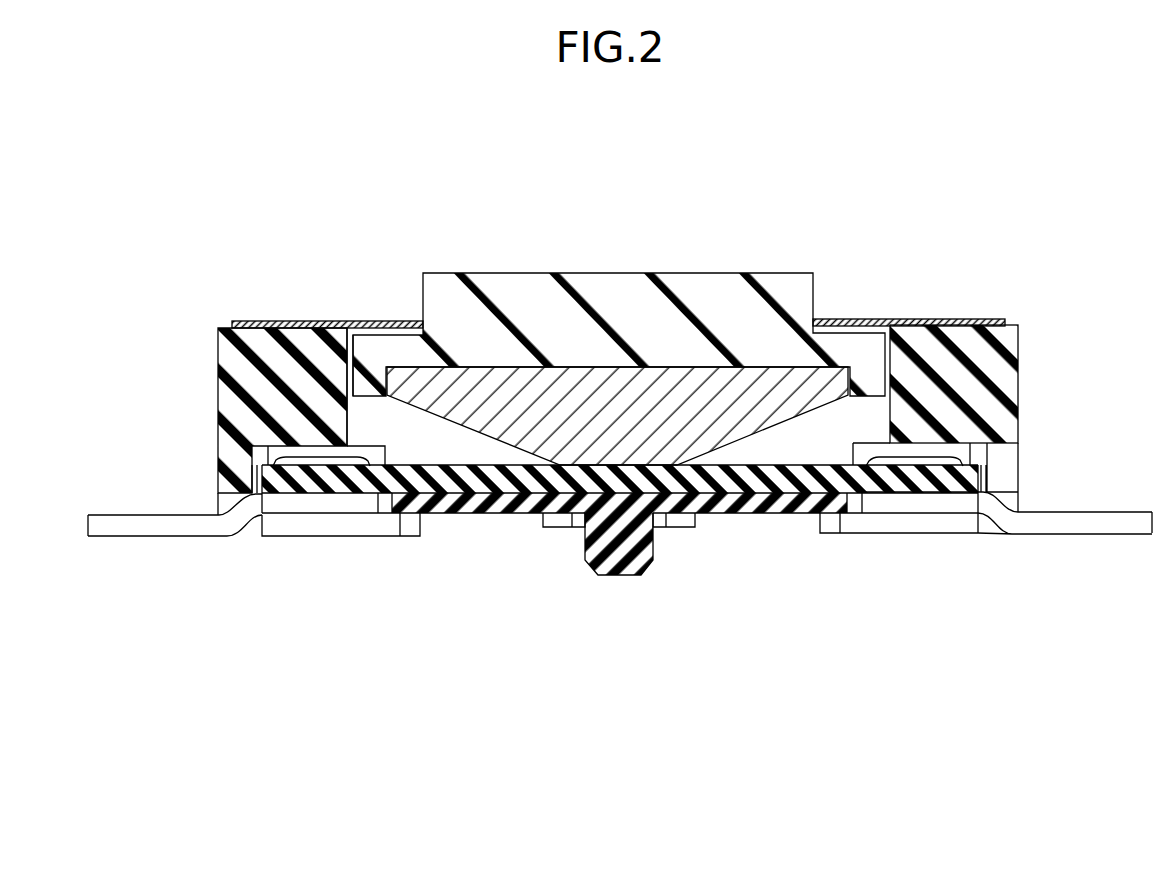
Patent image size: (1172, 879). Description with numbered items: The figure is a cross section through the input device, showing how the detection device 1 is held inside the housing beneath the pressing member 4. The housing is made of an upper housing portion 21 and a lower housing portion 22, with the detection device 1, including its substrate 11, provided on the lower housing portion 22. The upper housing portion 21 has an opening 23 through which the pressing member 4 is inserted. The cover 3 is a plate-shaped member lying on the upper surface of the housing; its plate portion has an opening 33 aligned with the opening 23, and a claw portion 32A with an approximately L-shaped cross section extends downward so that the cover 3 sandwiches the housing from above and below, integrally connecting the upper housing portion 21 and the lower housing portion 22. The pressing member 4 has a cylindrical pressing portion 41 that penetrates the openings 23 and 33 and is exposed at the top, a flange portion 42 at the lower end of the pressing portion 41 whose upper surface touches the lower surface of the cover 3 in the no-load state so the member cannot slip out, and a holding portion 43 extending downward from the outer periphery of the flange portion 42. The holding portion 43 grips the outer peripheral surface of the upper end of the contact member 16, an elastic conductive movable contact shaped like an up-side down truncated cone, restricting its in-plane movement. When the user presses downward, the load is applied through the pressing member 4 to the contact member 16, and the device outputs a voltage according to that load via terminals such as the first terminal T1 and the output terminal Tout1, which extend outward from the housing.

The detection device 1 is at (620, 542).
The substrate 11 is at (472, 482).
The contact member 16 is at (605, 428).
The upper housing portion 21 is at (218, 353).
The lower housing portion 22 is at (334, 536).
The opening 23 is at (343, 362).
The cover 3 is at (968, 319).
The claw portion 32A is at (555, 520).
The opening 33 is at (406, 309).
The pressing member 4 is at (635, 292).
The pressing portion 41 is at (760, 286).
The flange portion 42 is at (829, 349).
The holding portion 43 is at (868, 376).
The output terminal Tout1 is at (158, 513).
The first terminal T1 is at (1087, 510).